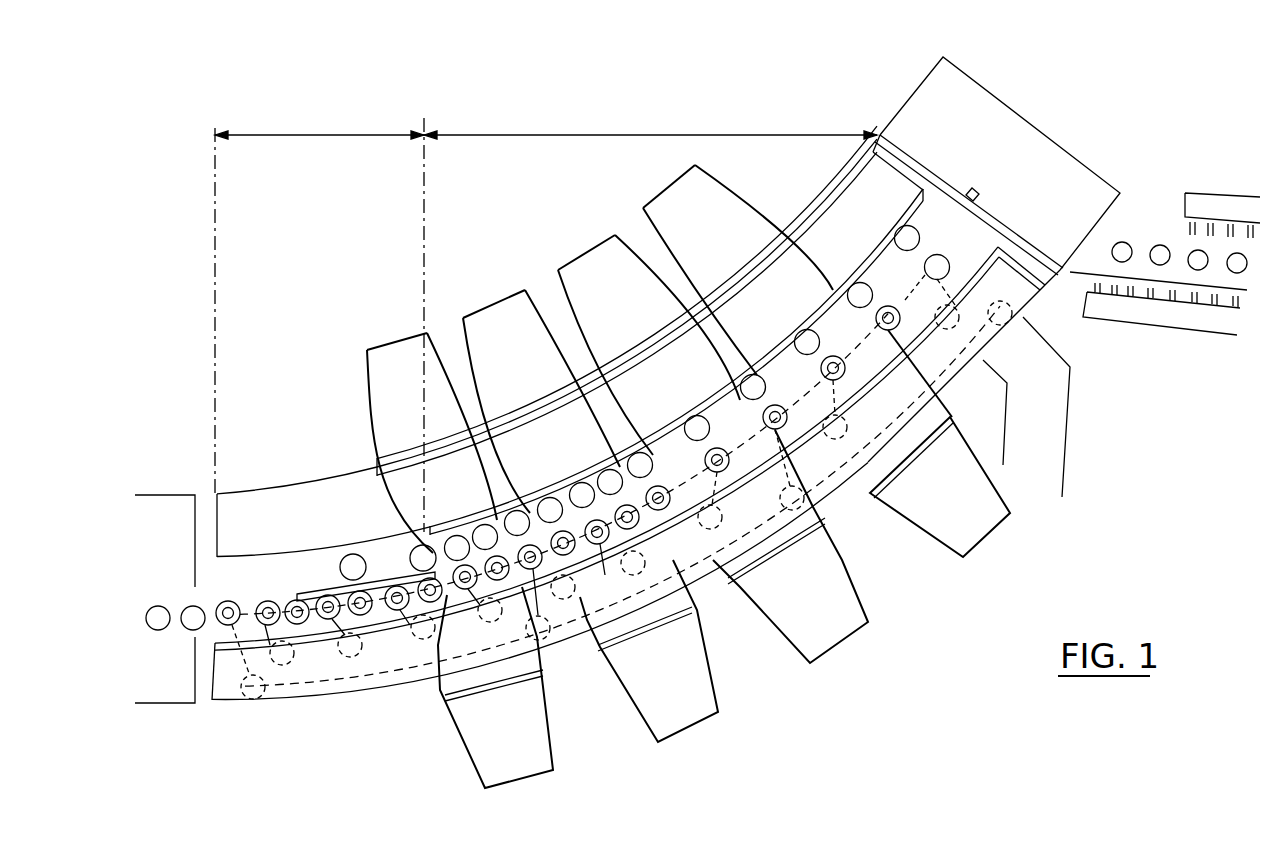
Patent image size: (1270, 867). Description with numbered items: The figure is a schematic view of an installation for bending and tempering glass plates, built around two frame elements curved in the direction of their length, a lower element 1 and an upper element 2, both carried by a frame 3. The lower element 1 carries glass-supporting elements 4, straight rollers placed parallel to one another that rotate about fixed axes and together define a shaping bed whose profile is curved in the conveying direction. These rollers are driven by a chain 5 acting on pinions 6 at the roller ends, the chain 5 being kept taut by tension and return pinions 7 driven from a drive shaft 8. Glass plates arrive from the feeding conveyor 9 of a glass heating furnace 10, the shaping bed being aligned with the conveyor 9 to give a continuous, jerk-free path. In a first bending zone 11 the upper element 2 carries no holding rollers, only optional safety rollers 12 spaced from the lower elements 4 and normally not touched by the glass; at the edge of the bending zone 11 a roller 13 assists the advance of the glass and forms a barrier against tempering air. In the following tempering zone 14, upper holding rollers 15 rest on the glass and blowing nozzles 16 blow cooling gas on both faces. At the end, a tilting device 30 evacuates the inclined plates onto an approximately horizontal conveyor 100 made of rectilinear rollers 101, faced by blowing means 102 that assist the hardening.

The lower frame element 1 is at (1017, 280).
The upper frame element 2 is at (893, 180).
The frame 3 is at (1060, 417).
The glass-supporting elements 4 is at (228, 601).
The chain 5 is at (352, 682).
The pinions 6 is at (270, 640).
The tension and return pinions 7 is at (250, 696).
The drive shaft 8 is at (1000, 310).
The feeding conveyor 9 is at (154, 630).
The glass heating furnace 10 is at (152, 526).
The bending zone 11 is at (319, 124).
The safety rollers 12 is at (353, 554).
The barrier roller 13 is at (423, 545).
The tempering zone 14 is at (650, 124).
The upper holding rollers 15 is at (860, 283).
The blowing nozzles 16 is at (416, 402).
The tilting device 30 is at (1004, 157).
The conveyor 100 is at (1143, 268).
The rectilinear rollers 101 is at (1120, 245).
The blowing means 102 is at (1217, 205).